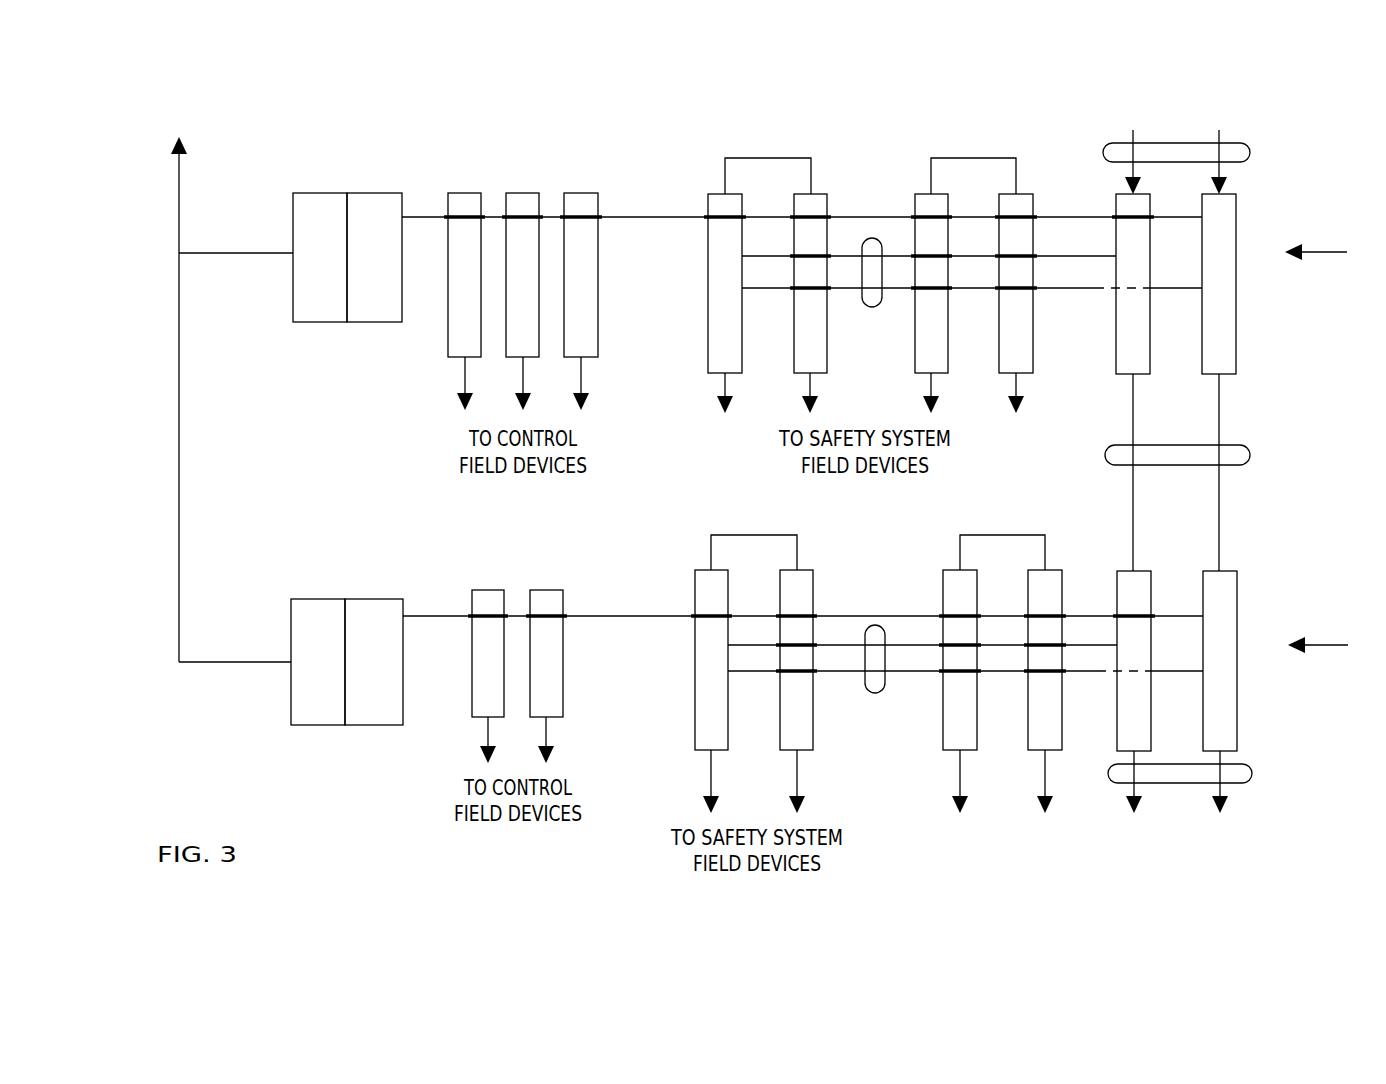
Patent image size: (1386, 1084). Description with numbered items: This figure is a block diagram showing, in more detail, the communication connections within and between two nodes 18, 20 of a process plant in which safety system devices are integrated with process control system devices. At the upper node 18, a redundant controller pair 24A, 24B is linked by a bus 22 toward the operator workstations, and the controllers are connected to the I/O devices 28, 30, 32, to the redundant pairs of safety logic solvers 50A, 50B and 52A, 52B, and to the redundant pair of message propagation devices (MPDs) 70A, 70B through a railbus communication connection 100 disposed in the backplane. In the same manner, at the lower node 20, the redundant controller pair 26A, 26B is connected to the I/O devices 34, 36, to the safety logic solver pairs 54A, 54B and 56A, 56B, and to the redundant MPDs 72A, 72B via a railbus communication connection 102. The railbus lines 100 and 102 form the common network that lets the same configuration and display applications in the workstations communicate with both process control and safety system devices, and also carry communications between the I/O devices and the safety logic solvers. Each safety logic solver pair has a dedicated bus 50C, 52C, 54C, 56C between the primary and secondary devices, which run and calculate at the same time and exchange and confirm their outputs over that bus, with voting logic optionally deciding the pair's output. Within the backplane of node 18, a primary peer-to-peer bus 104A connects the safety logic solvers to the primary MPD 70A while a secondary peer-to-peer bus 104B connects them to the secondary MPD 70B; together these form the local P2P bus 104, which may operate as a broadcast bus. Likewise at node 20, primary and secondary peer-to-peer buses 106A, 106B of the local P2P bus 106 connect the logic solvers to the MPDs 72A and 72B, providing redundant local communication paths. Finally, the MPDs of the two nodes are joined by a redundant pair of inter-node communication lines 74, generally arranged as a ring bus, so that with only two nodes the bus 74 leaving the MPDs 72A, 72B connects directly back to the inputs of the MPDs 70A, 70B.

The node 18 is at (1329, 252).
The node 20 is at (1333, 645).
The bus to operator workstations 22 is at (178, 453).
The redundant controller 24A is at (318, 325).
The redundant controller 24B is at (377, 325).
The redundant controller 26A is at (313, 597).
The redundant controller 26B is at (368, 597).
The I/O device 28 is at (467, 190).
The I/O device 30 is at (525, 190).
The I/O device 32 is at (580, 190).
The I/O device 34 is at (487, 588).
The I/O device 36 is at (547, 588).
The primary safety logic solver 50A is at (715, 193).
The secondary safety logic solver 50B is at (823, 192).
The dedicated bus 50C is at (777, 157).
The primary safety logic solver 52A is at (918, 192).
The secondary safety logic solver 52B is at (1024, 192).
The dedicated bus 52C is at (978, 157).
The primary safety logic solver 54A is at (700, 568).
The secondary safety logic solver 54B is at (808, 568).
The dedicated bus 54C is at (763, 533).
The primary safety logic solver 56A is at (950, 568).
The secondary safety logic solver 56B is at (1055, 568).
The dedicated bus 56C is at (1010, 533).
The primary MPD 70A is at (1113, 207).
The secondary MPD 70B is at (1237, 212).
The primary MPD 72A is at (1142, 568).
The secondary MPD 72B is at (1228, 568).
The inter-node communication bus 74 is at (1235, 142).
The railbus communication connection 100 is at (651, 220).
The railbus communication connection 102 is at (627, 620).
The local P2P bus 104 is at (870, 310).
The primary peer-to-peer bus 104A is at (1072, 258).
The secondary peer-to-peer bus 104B is at (1068, 290).
The local P2P bus 106 is at (878, 692).
The primary peer-to-peer bus 106A is at (1072, 645).
The secondary peer-to-peer bus 106B is at (1073, 675).